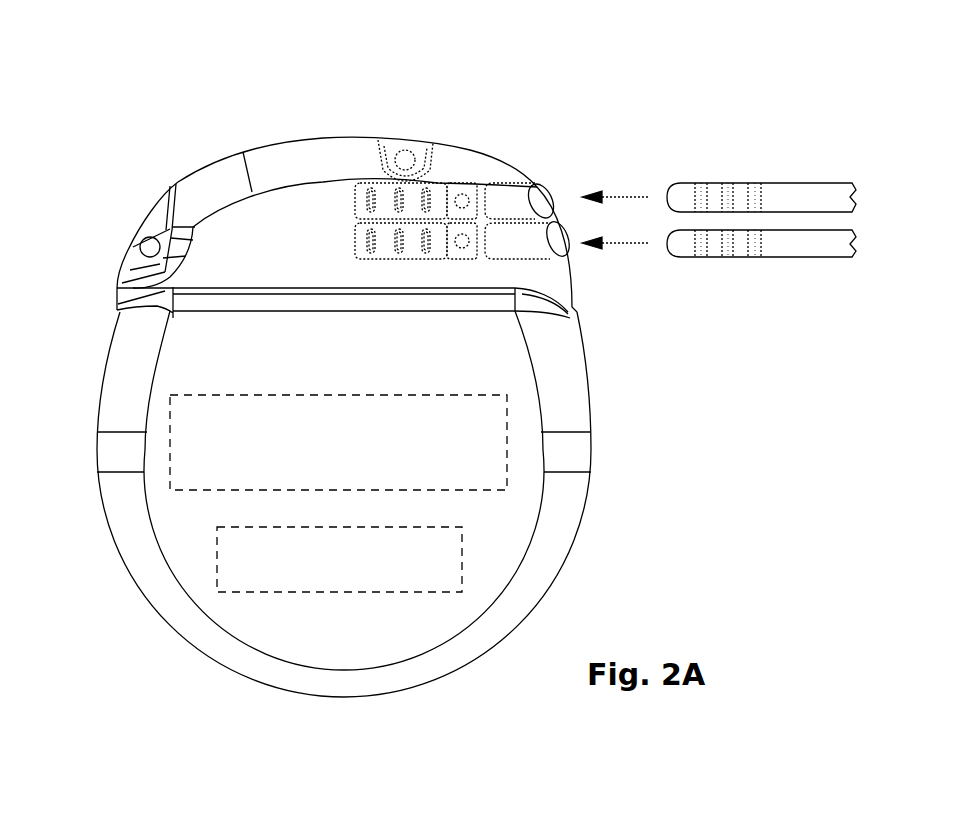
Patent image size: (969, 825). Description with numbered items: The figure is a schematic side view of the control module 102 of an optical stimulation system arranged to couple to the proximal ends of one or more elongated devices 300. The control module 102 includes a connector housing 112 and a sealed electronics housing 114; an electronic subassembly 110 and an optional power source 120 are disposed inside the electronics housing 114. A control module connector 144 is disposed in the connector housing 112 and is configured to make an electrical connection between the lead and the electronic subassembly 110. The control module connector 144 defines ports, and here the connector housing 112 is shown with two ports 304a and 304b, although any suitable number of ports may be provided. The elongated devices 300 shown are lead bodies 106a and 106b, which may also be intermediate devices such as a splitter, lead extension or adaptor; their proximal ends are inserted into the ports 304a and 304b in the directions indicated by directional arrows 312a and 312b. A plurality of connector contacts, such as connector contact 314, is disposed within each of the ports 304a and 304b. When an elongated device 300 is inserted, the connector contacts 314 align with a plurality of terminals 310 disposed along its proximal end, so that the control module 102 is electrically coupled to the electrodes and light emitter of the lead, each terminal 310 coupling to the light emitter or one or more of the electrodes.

The control module 102 is at (150, 172).
The electronic subassembly 110 is at (187, 447).
The connector housing 112 is at (318, 147).
The sealed electronics housing 114 is at (170, 372).
The power source 120 is at (237, 567).
The control module connector 144 is at (437, 185).
The elongated device 300 is at (758, 201).
The port 304a is at (548, 186).
The port 304b is at (574, 253).
The lead body 106a is at (678, 183).
The lead body 106b is at (677, 257).
The terminals 310 is at (765, 177).
The directional arrow 312a is at (620, 197).
The directional arrow 312b is at (630, 245).
The connector contact 314 is at (383, 185).